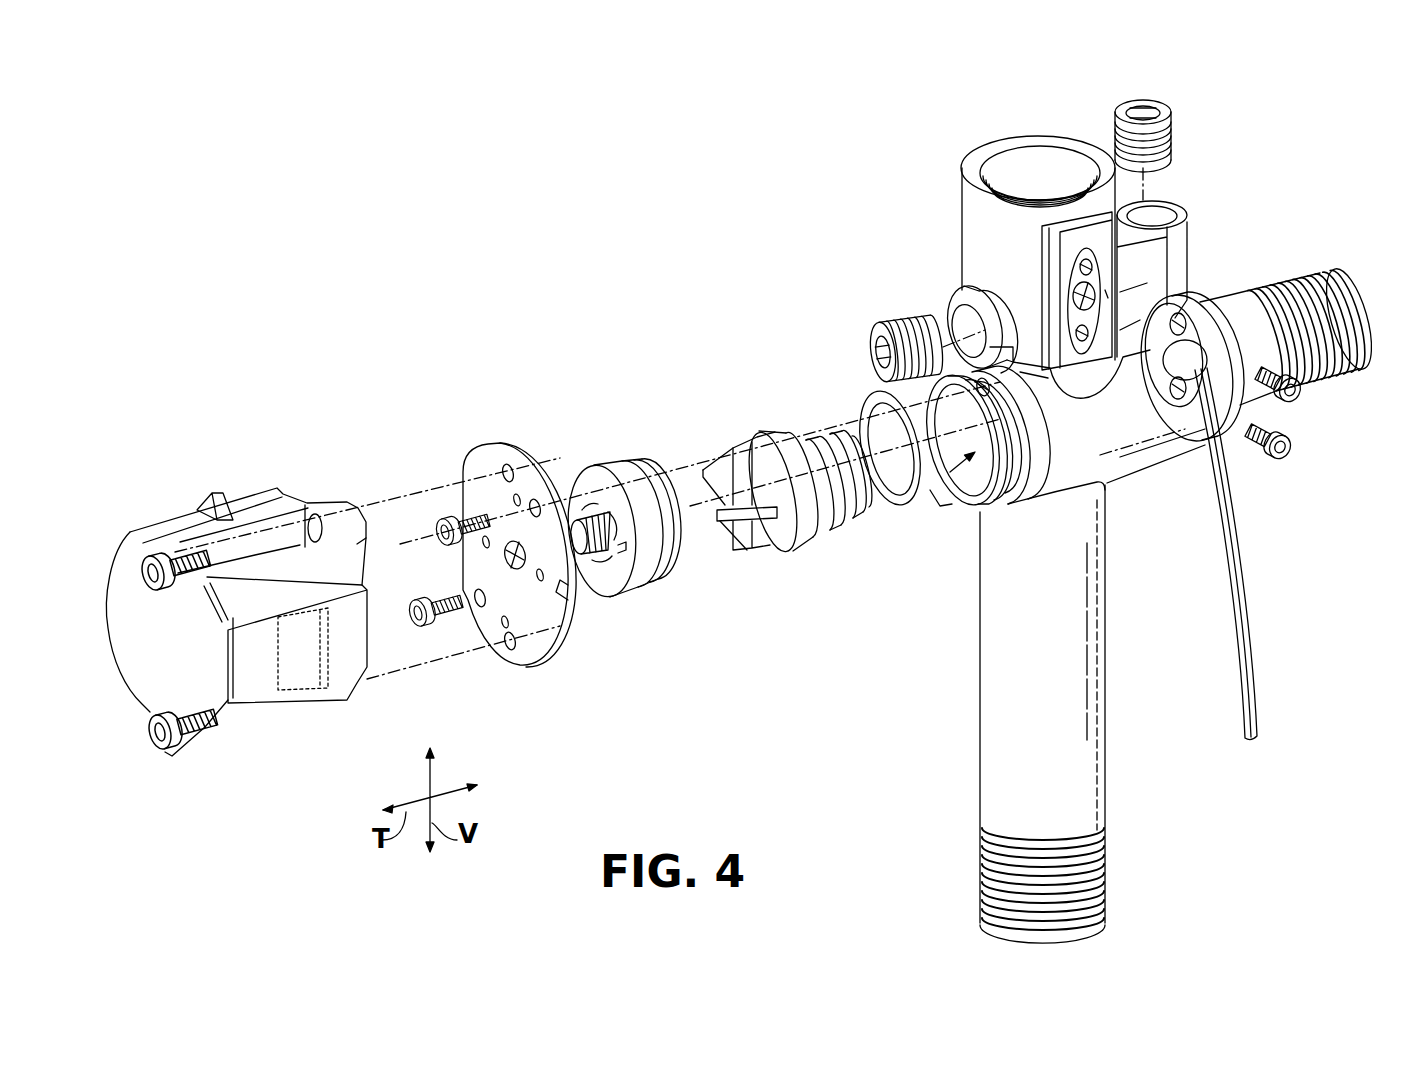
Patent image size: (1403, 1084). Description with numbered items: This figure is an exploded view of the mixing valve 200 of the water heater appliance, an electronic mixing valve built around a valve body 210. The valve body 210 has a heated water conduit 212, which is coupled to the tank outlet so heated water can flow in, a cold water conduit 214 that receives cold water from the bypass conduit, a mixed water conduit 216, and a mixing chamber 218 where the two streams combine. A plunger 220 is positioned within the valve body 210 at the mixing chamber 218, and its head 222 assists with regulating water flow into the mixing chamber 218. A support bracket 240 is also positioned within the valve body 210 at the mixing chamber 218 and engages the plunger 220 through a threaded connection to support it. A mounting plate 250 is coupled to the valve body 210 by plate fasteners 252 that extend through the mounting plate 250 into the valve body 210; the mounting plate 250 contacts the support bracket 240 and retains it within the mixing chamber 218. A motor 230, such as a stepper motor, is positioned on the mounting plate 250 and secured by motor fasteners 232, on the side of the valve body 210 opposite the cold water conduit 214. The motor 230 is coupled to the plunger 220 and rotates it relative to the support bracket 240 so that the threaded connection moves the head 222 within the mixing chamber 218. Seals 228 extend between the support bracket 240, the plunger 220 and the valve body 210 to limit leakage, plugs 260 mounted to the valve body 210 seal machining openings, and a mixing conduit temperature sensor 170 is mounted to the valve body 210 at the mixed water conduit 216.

The mixing valve 200 is at (1309, 116).
The valve body 210 is at (1103, 487).
The heated water conduit 212 is at (992, 712).
The cold water conduit 214 is at (1236, 305).
The mixed water conduit 216 is at (978, 252).
The mixing chamber 218 is at (943, 497).
The plunger 220 is at (583, 500).
The head 222 is at (788, 430).
The seals 228 is at (902, 508).
The motor 230 is at (134, 545).
The motor fasteners 232 is at (151, 592).
The support bracket 240 is at (690, 532).
The mounting plate 250 is at (530, 658).
The plate fasteners 252 is at (427, 602).
The plugs 260 is at (866, 349).
The mixing conduit temperature sensor 170 is at (1143, 383).